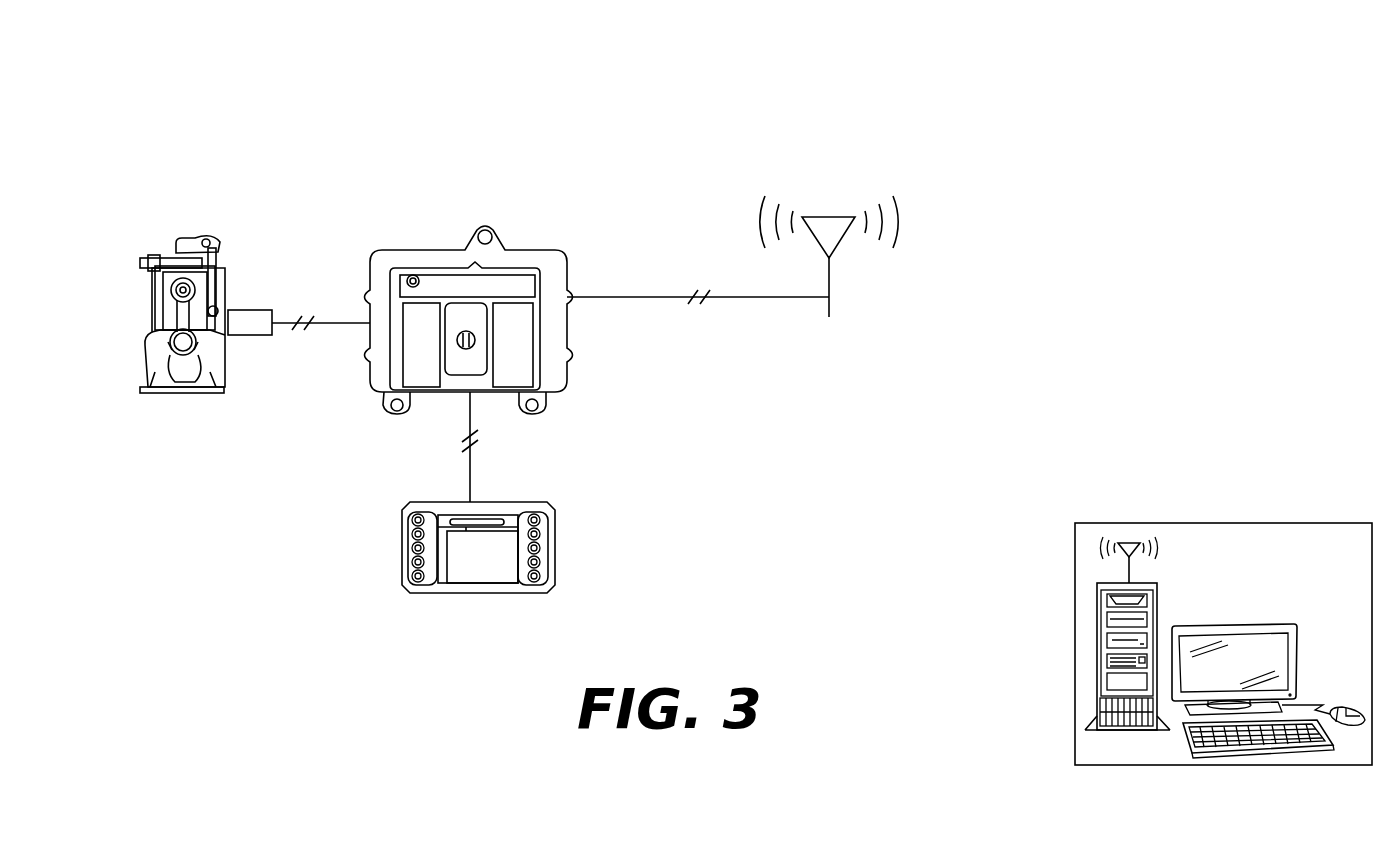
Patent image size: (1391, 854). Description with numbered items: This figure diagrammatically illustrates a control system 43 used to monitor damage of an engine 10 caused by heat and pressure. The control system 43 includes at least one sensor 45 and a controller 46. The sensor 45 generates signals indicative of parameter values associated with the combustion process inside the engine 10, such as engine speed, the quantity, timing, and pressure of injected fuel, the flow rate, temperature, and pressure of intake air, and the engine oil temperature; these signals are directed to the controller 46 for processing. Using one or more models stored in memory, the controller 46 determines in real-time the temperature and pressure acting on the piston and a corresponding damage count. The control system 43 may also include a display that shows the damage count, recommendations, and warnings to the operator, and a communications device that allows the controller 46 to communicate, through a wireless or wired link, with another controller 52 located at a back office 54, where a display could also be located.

The control system 43 is at (1106, 142).
The engine 10 is at (233, 221).
The sensor 45 is at (251, 309).
The controller 46 is at (520, 246).
The controller 52 is at (1158, 620).
The back office 54 is at (1075, 717).